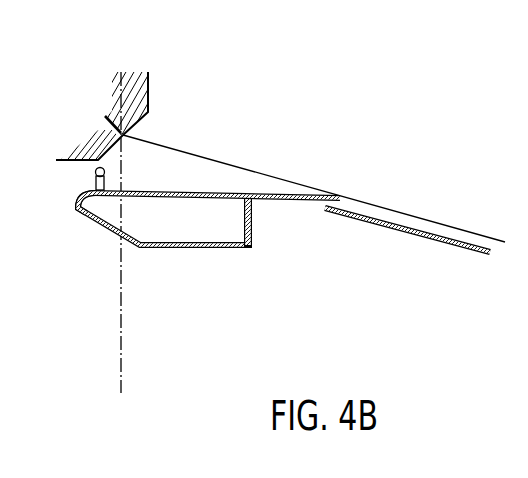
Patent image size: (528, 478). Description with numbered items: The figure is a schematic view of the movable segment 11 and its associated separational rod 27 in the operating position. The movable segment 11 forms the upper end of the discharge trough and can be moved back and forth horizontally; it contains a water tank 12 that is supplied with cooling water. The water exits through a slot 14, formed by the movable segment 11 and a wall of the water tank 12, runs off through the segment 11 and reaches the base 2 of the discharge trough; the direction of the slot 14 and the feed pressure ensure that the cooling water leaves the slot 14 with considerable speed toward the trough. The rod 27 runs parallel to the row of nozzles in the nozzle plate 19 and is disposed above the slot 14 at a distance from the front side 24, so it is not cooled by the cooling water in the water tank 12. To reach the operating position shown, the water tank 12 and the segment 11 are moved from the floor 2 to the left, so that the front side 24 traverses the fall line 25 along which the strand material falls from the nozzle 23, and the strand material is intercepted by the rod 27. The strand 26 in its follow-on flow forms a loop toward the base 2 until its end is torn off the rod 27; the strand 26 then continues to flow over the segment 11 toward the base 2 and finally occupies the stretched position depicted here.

The base of the discharge trough 2 is at (402, 212).
The movable segment 11 is at (230, 190).
The water tank 12 is at (195, 233).
The slot 14 is at (101, 188).
The nozzle plate 19 is at (142, 126).
The nozzle 23 is at (105, 115).
The front side 24 is at (76, 207).
The fall line 25 is at (119, 333).
The strand 26 is at (272, 172).
The rod 27 is at (107, 168).